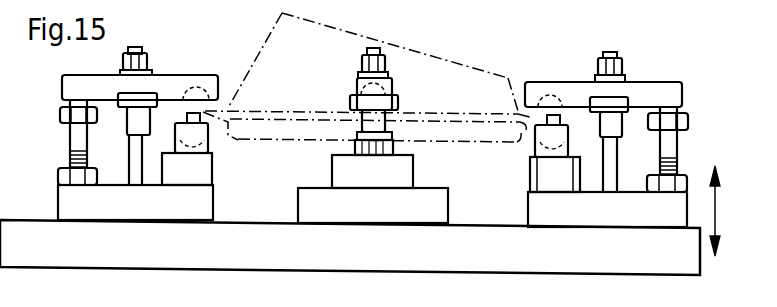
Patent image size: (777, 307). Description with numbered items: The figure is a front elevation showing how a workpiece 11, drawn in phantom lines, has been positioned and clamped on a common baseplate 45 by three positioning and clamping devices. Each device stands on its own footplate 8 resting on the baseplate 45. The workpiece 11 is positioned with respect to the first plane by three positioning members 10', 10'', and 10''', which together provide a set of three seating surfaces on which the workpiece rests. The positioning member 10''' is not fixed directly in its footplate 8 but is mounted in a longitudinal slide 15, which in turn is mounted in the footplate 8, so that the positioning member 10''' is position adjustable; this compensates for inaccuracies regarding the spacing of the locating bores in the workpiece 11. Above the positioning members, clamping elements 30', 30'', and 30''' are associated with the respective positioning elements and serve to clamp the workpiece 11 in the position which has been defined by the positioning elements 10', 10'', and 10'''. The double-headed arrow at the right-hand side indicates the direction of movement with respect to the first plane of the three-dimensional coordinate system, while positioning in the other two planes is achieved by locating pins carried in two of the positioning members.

The footplate 8 is at (62, 207).
The positioning member 10' is at (211, 149).
The positioning member 10'' is at (400, 164).
The positioning member 10''' is at (599, 153).
The workpiece 11 is at (449, 66).
The longitudinal slide 15 is at (538, 180).
The clamping element 30' is at (138, 110).
The clamping element 30'' is at (399, 94).
The clamping element 30''' is at (606, 119).
The baseplate 45 is at (655, 258).